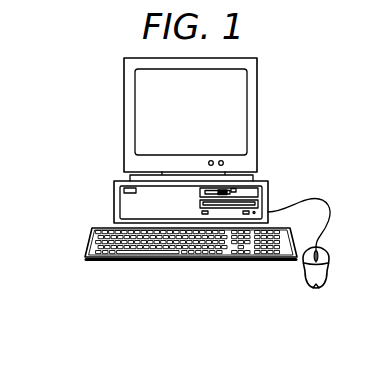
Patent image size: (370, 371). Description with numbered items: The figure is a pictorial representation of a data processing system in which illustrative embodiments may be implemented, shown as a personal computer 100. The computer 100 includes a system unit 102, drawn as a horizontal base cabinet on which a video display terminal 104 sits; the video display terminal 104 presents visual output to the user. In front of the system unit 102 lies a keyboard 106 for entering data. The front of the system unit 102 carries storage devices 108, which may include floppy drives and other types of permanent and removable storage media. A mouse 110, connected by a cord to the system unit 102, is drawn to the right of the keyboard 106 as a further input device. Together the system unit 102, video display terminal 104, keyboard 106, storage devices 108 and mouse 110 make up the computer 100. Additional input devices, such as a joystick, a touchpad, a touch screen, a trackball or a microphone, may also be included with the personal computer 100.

The computer 100 is at (63, 99).
The system unit 102 is at (114, 200).
The video display terminal 104 is at (257, 115).
The keyboard 106 is at (107, 262).
The storage devices 108 is at (262, 195).
The mouse 110 is at (318, 288).